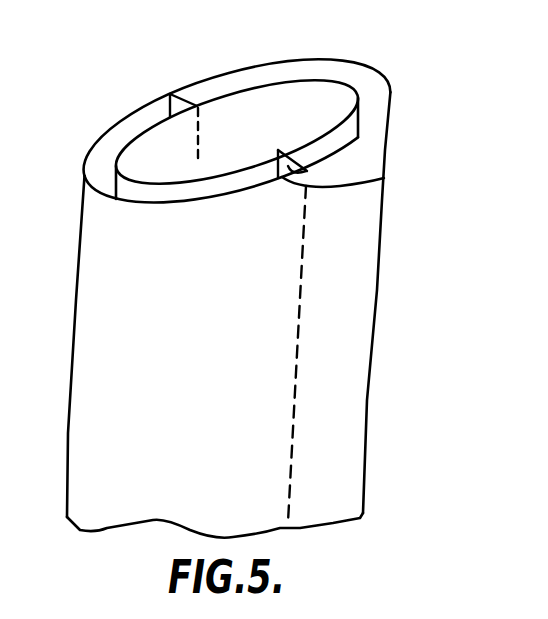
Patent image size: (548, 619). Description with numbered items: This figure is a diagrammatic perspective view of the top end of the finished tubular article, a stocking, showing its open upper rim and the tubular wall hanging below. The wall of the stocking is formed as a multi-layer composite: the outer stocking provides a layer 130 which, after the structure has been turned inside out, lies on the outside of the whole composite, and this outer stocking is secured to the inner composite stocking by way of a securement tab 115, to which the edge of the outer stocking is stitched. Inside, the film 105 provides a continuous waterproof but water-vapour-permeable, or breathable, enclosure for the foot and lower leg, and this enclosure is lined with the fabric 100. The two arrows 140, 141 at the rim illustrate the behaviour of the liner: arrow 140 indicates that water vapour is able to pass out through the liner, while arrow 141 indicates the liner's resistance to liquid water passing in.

The fabric 100 is at (146, 136).
The film 105 is at (276, 88).
The securement tab 115 is at (372, 179).
The layer 130 is at (336, 285).
The arrow 140 is at (266, 107).
The arrow 141 is at (200, 68).